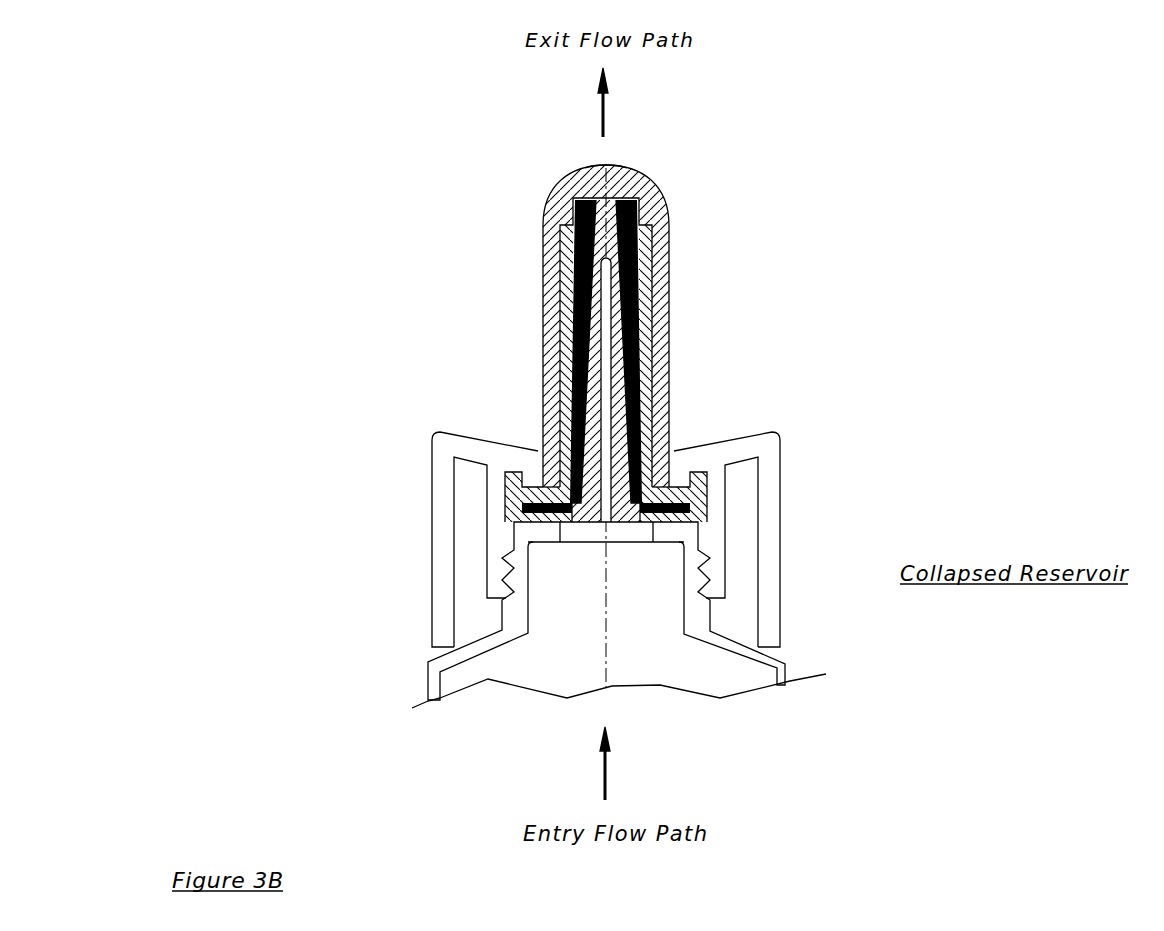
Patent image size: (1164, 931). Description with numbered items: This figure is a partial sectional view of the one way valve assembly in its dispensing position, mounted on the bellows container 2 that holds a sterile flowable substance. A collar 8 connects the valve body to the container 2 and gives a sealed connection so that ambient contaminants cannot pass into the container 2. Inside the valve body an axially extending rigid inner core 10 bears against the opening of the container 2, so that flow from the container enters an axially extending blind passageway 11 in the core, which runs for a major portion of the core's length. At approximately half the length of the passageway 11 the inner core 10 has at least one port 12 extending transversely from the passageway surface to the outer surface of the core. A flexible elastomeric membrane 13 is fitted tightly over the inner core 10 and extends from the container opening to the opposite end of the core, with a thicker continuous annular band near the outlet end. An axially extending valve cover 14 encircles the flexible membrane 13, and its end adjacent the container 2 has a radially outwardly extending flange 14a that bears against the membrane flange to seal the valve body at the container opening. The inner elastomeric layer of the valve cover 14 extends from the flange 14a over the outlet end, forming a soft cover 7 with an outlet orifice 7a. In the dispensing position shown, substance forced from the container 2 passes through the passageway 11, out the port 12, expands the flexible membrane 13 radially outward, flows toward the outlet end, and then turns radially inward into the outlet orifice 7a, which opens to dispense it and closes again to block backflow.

The soft cover 7 is at (657, 193).
The outlet orifice 7a is at (605, 167).
The flexible membrane 13 is at (549, 300).
The valve cover 14 is at (545, 263).
The blind passageway 11 is at (606, 528).
The inner core 10 is at (641, 262).
The port 12 is at (647, 392).
The flange 14a is at (520, 503).
The collar 8 is at (432, 540).
The container 2 is at (700, 643).